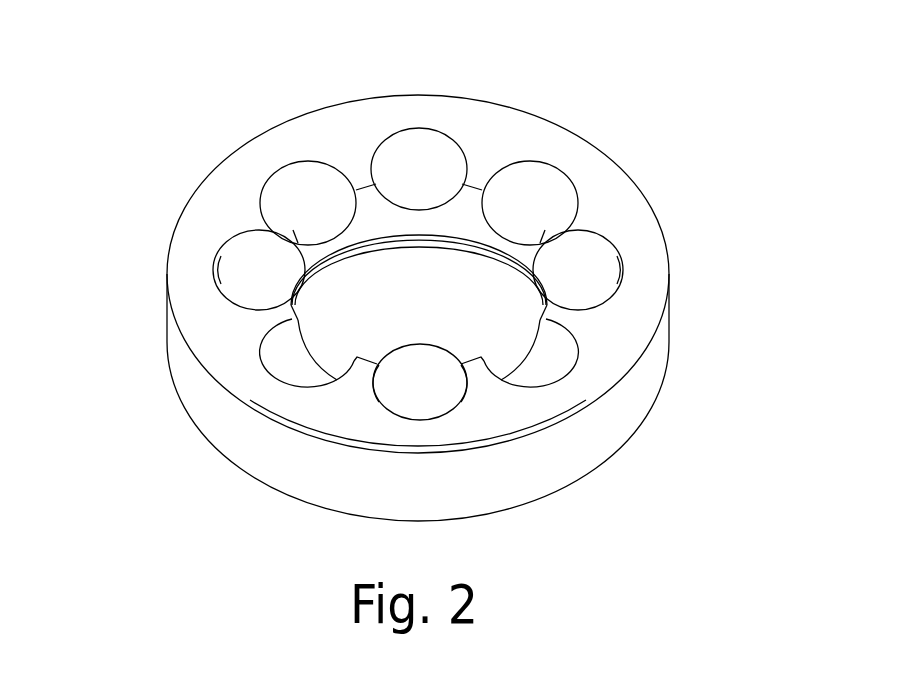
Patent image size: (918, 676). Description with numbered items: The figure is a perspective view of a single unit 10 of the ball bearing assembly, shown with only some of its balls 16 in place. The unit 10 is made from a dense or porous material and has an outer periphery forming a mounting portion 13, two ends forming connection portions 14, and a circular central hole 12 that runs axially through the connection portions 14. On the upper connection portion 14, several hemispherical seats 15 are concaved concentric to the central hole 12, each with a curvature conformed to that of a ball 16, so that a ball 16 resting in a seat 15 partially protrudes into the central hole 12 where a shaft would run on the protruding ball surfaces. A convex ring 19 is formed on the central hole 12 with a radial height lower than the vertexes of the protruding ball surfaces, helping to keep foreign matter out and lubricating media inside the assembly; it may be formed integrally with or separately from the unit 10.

The unit 10 is at (690, 276).
The central hole 12 is at (380, 298).
The mounting portion 13 is at (232, 433).
The connection portion 14 is at (607, 205).
The hemispherical seat 15 is at (533, 197).
The ball 16 is at (588, 262).
The convex ring 19 is at (413, 237).